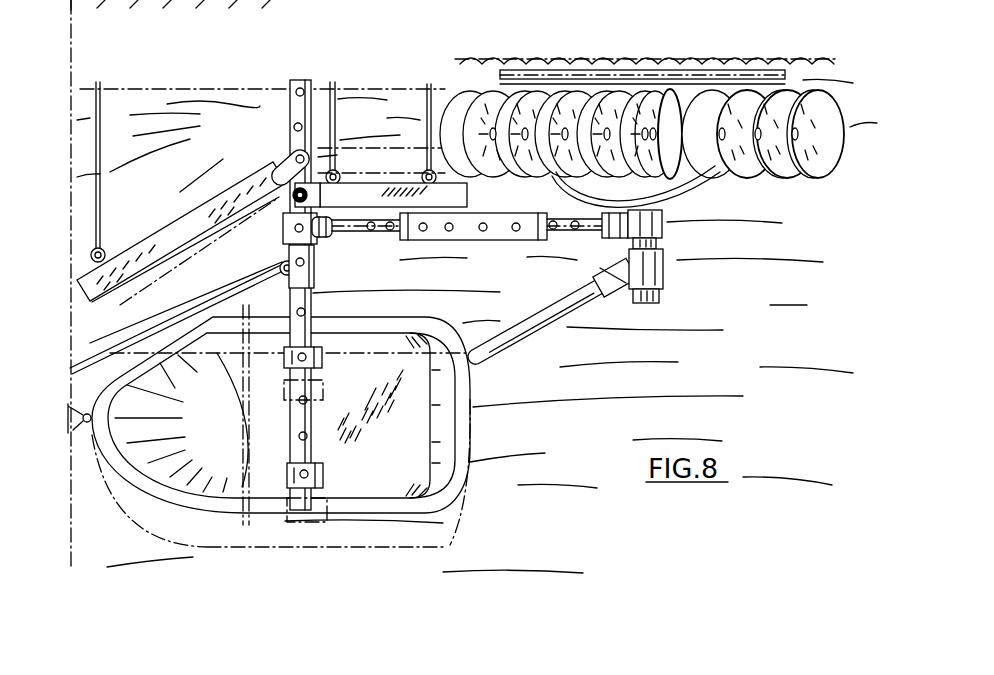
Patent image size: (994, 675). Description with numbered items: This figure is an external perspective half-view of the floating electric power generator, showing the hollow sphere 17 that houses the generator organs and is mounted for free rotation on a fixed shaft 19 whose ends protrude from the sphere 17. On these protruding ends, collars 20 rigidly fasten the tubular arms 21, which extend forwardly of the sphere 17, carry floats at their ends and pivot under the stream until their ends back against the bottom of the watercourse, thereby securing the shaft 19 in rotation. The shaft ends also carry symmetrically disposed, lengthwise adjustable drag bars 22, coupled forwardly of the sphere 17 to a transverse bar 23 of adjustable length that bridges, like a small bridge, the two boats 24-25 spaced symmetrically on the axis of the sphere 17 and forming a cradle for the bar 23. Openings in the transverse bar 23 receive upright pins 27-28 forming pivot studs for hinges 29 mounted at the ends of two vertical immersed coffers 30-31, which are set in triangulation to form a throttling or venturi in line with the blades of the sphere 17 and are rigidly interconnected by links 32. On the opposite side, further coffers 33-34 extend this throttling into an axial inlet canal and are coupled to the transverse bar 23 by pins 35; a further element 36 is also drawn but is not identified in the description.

The hollow sphere 17 is at (686, 196).
The fixed shaft 19 is at (659, 233).
The collars 20 is at (653, 279).
The arms 21 is at (587, 292).
The drag bars 22 is at (530, 230).
The transverse bar 23 is at (313, 285).
The boats 24-25 is at (447, 425).
The upright pins 27-28 is at (298, 153).
The hinges 29 is at (278, 164).
The vertical coffers 30-31 is at (185, 232).
The links 32 is at (100, 121).
The further coffers 33-34 is at (370, 198).
The pins 35 is at (283, 264).
The rod 36 is at (336, 131).